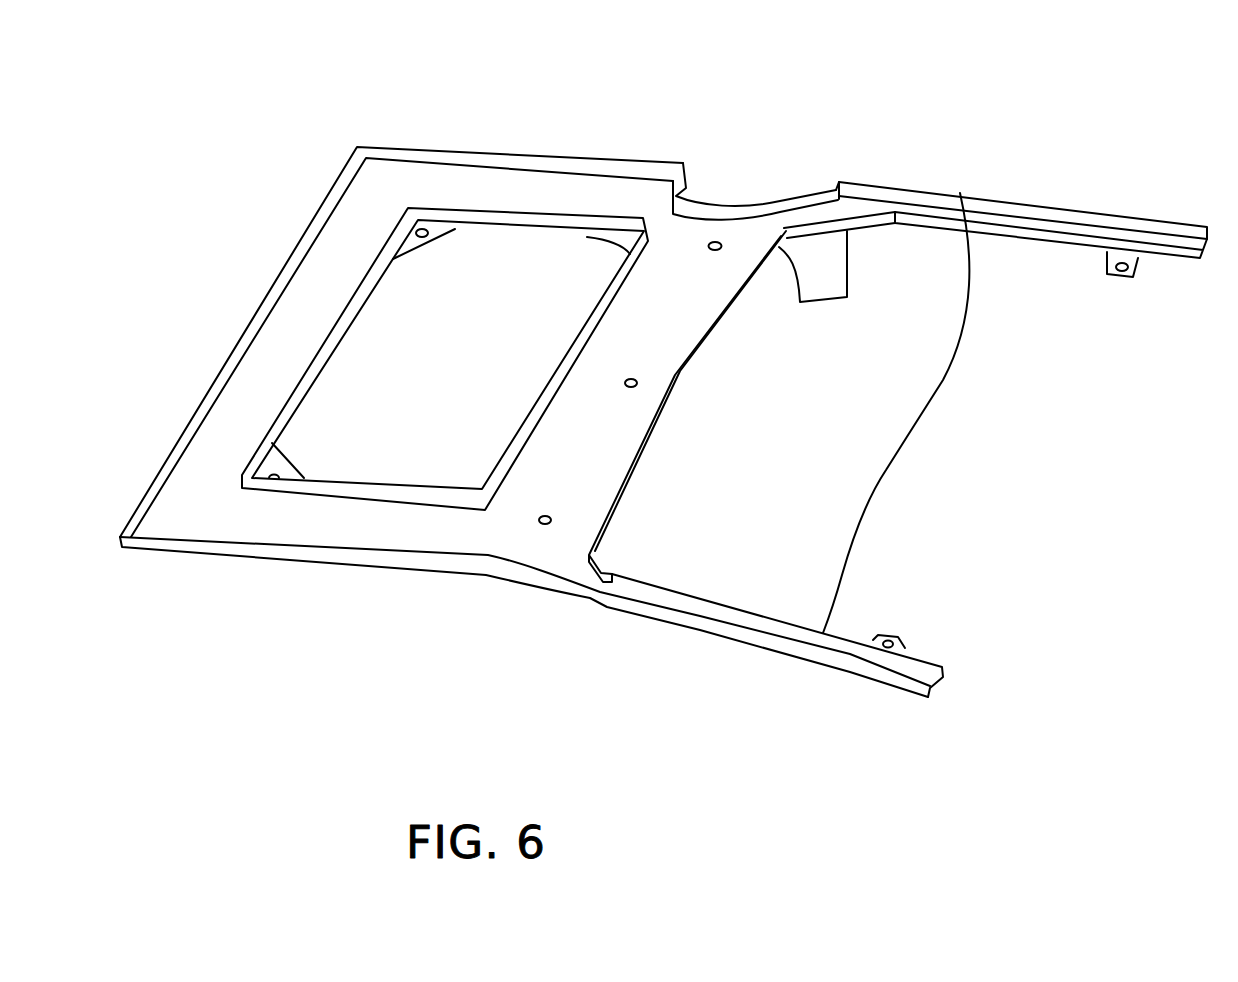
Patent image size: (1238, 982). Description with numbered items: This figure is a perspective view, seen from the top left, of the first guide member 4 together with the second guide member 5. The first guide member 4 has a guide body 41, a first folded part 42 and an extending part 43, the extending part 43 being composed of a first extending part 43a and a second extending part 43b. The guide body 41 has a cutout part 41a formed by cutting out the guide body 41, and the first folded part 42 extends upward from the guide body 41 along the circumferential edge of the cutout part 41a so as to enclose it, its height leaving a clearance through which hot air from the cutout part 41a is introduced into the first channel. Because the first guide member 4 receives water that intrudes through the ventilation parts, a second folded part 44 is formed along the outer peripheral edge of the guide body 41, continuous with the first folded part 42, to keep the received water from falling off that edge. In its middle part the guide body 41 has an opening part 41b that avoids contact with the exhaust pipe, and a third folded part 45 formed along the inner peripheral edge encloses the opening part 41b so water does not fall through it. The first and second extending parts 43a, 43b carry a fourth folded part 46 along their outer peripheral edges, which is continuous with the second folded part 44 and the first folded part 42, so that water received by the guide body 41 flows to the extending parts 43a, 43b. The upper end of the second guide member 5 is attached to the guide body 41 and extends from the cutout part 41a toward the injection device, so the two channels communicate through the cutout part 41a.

The first guide member 4 is at (430, 147).
The guide body 41 is at (505, 197).
The cutout part 41a is at (794, 197).
The opening part 41b is at (312, 370).
The first folded part 42 is at (707, 212).
The extending part 43 is at (1010, 200).
The first extending part 43a is at (1088, 228).
The second extending part 43b is at (773, 635).
The second folded part 44 is at (706, 333).
The third folded part 45 is at (533, 220).
The fourth folded part 46 is at (960, 193).
The second guide member 5 is at (830, 306).